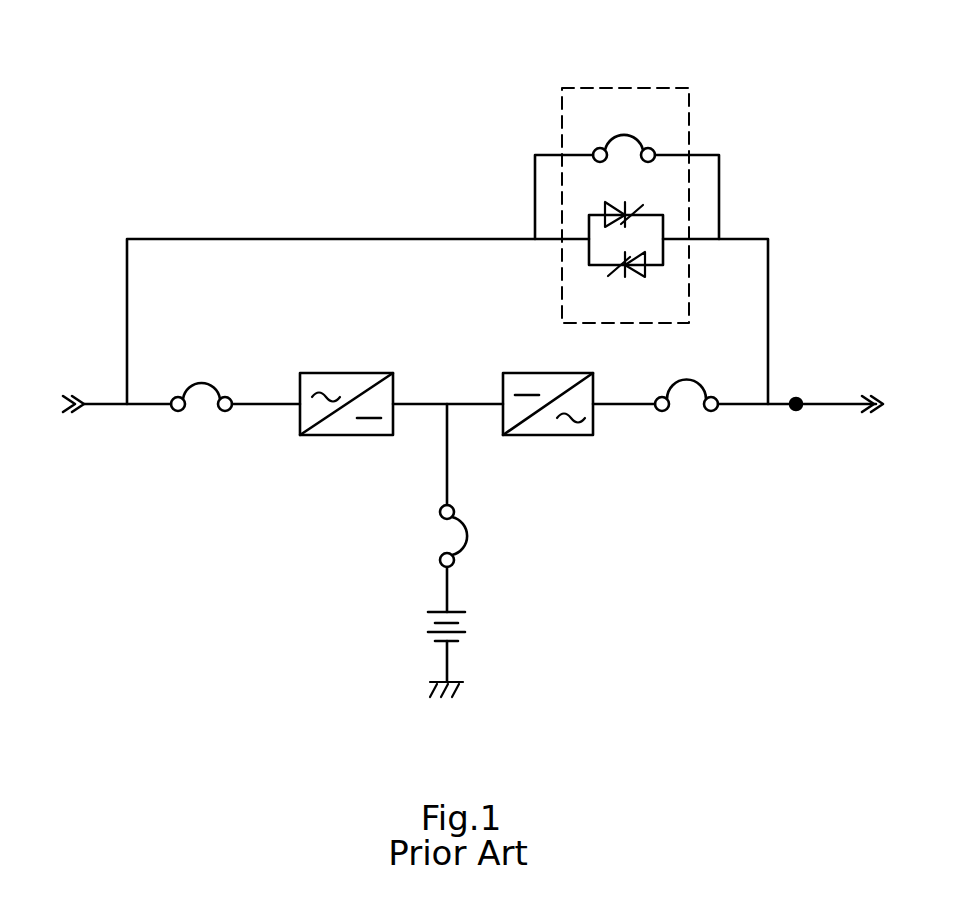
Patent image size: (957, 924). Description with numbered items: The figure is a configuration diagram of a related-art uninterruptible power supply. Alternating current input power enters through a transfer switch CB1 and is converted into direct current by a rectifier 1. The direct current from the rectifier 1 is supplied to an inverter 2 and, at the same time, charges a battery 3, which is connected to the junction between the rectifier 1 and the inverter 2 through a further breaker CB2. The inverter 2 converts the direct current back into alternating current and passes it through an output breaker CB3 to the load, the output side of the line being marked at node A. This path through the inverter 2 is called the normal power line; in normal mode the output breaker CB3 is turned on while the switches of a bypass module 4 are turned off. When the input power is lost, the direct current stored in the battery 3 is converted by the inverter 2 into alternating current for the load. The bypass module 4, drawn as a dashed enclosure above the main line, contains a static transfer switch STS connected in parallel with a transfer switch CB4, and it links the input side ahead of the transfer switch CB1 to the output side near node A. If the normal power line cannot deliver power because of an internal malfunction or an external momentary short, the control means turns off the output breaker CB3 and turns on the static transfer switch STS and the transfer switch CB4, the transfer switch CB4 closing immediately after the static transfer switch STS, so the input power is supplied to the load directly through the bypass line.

The rectifier 1 is at (345, 373).
The inverter 2 is at (525, 373).
The battery 3 is at (466, 612).
The bypass module 4 is at (625, 173).
The transfer switch CB1 is at (201, 412).
The circuit breaker CB2 is at (478, 536).
The output breaker CB3 is at (686, 411).
The transfer switch CB4 is at (624, 133).
The static transfer switch STS is at (626, 256).
The node A is at (795, 390).